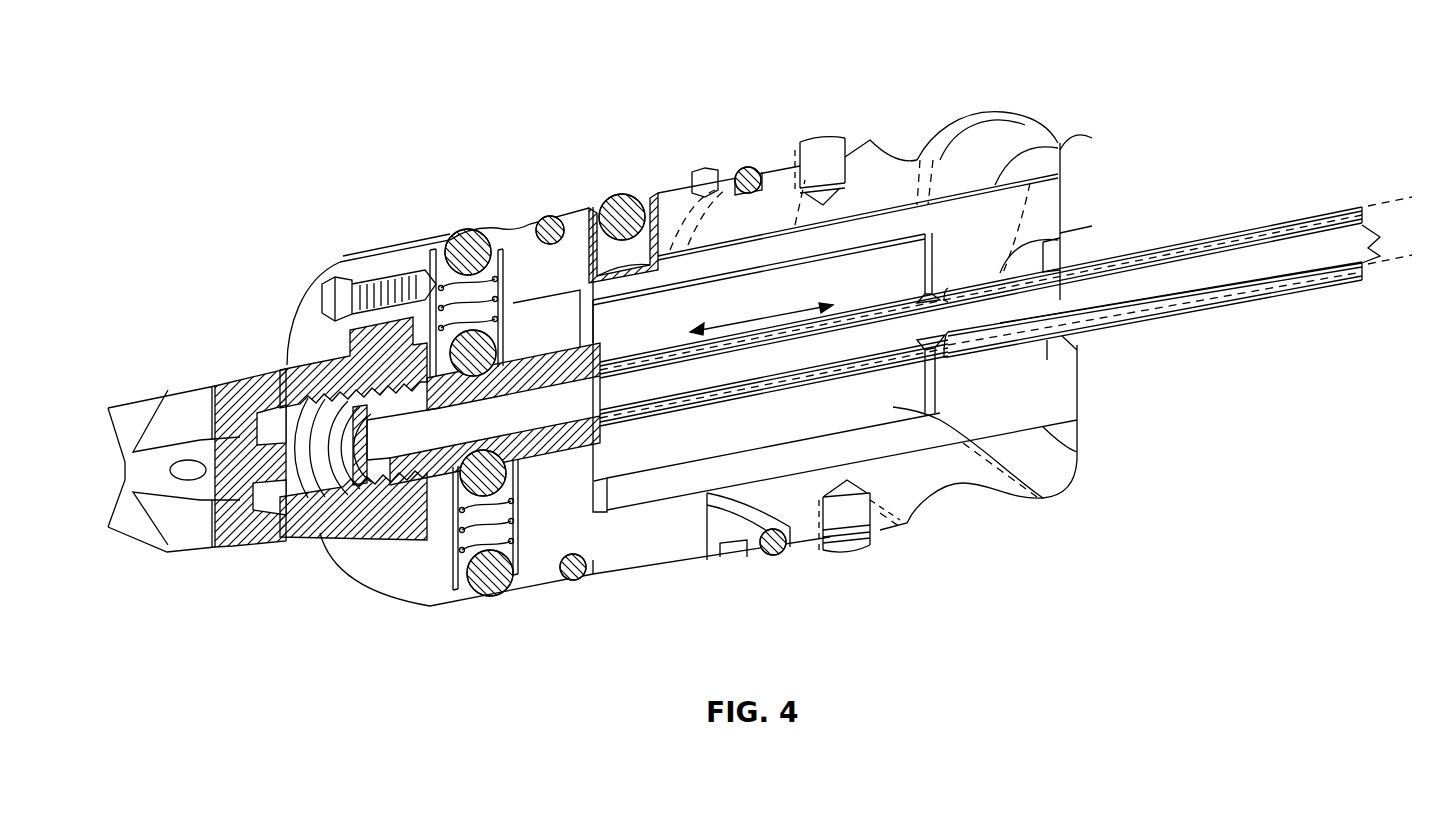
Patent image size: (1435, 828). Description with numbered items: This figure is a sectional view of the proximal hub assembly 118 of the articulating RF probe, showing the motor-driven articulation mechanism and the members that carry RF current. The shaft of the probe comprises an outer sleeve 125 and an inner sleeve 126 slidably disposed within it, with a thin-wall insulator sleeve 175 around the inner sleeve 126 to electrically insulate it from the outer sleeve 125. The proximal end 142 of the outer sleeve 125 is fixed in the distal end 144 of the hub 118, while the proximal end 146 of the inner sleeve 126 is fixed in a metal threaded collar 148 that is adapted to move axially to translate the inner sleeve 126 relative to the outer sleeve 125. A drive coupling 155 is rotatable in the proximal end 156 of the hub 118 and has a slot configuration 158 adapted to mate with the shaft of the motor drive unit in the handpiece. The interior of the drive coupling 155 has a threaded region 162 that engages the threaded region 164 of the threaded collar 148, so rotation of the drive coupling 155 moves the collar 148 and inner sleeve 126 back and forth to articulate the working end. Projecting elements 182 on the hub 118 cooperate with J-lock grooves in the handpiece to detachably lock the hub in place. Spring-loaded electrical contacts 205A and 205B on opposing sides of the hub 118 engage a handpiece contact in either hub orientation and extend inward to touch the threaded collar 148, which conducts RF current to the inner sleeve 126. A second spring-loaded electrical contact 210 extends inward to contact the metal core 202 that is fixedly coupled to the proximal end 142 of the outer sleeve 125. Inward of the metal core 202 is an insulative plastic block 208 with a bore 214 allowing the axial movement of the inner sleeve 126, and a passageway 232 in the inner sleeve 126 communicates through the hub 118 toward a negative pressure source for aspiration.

The proximal hub assembly 118 is at (736, 338).
The outer sleeve 125 is at (1245, 234).
The inner sleeve 126 is at (692, 392).
The proximal end of outer sleeve 142 is at (1060, 236).
The distal end of hub 144 is at (1062, 162).
The proximal end of inner sleeve 146 is at (318, 532).
The threaded collar 148 is at (440, 458).
The drive coupling 155 is at (188, 555).
The proximal end of hub 156 is at (315, 288).
The slot configuration 158 is at (128, 470).
The threaded region of drive coupling 162 is at (258, 548).
The threaded region of threaded collar 164 is at (300, 360).
The insulator sleeve 175 is at (1378, 270).
The projecting elements 182 is at (822, 140).
The metal core 202 is at (1067, 377).
The first spring-loaded electrical contact 205A is at (462, 232).
The first spring-loaded electrical contact 205B is at (500, 592).
The insulative plastic block 208 is at (1050, 496).
The second spring-loaded electrical contact 210 is at (626, 194).
The bore 214 is at (748, 392).
The passageway 232 is at (1188, 284).